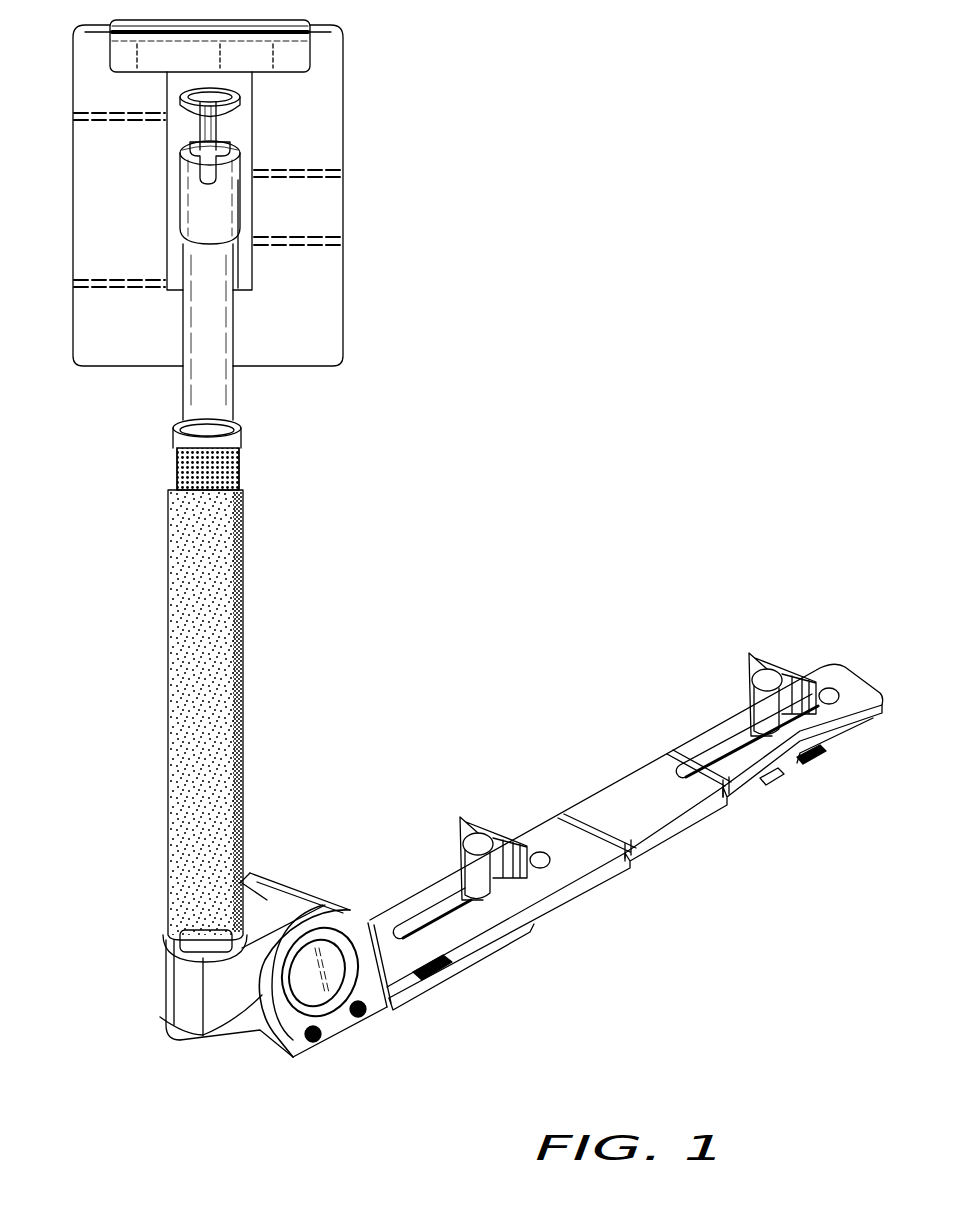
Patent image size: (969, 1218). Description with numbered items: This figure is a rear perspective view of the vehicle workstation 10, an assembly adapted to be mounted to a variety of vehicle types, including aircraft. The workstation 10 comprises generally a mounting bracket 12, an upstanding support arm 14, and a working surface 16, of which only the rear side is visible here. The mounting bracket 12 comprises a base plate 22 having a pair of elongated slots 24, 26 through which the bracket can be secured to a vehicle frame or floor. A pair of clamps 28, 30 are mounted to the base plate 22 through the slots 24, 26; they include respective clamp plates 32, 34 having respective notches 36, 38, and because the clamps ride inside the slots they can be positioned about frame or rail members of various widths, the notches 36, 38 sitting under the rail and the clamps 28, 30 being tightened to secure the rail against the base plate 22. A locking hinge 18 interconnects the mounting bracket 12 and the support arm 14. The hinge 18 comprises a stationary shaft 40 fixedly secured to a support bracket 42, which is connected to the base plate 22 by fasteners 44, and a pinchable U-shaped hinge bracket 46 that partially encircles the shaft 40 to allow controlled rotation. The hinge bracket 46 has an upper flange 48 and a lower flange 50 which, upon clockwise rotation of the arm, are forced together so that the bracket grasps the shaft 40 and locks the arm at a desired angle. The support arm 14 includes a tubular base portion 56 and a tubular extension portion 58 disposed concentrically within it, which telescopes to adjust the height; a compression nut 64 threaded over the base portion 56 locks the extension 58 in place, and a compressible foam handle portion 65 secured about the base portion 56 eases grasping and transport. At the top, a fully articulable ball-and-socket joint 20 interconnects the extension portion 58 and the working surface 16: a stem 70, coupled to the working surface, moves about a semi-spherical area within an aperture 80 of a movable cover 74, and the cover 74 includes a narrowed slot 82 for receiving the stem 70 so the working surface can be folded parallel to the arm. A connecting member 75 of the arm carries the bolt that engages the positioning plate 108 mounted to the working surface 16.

The vehicle workstation 10 is at (570, 310).
The mounting bracket 12 is at (621, 735).
The upstanding support arm 14 is at (247, 677).
The working surface 16 is at (70, 140).
The locking hinge 18 is at (330, 893).
The ball-and-socket joint 20 is at (227, 133).
The base plate 22 is at (648, 813).
The elongated slot 24 is at (417, 920).
The elongated slot 26 is at (838, 693).
The clamp 28 is at (478, 840).
The clamp 30 is at (767, 680).
The clamp plate 32 is at (510, 922).
The clamp plate 34 is at (766, 776).
The notch 36 is at (440, 977).
The notch 38 is at (812, 752).
The stationary shaft 40 is at (318, 1000).
The support bracket 42 is at (380, 945).
The fasteners 44 is at (317, 1037).
The U-shaped hinge bracket 46 is at (316, 893).
The upper flange 48 is at (213, 992).
The lower flange 50 is at (222, 1030).
The tubular base portion 56 is at (170, 937).
The tubular extension portion 58 is at (213, 343).
The compression nut 64 is at (240, 433).
The compressible foam handle portion 65 is at (172, 592).
The stem 70 is at (213, 117).
The movable cover 74 is at (195, 210).
The connecting member 75 is at (195, 110).
The aperture 80 is at (232, 134).
The narrowed slot 82 is at (218, 192).
The positioning plate 108 is at (170, 258).